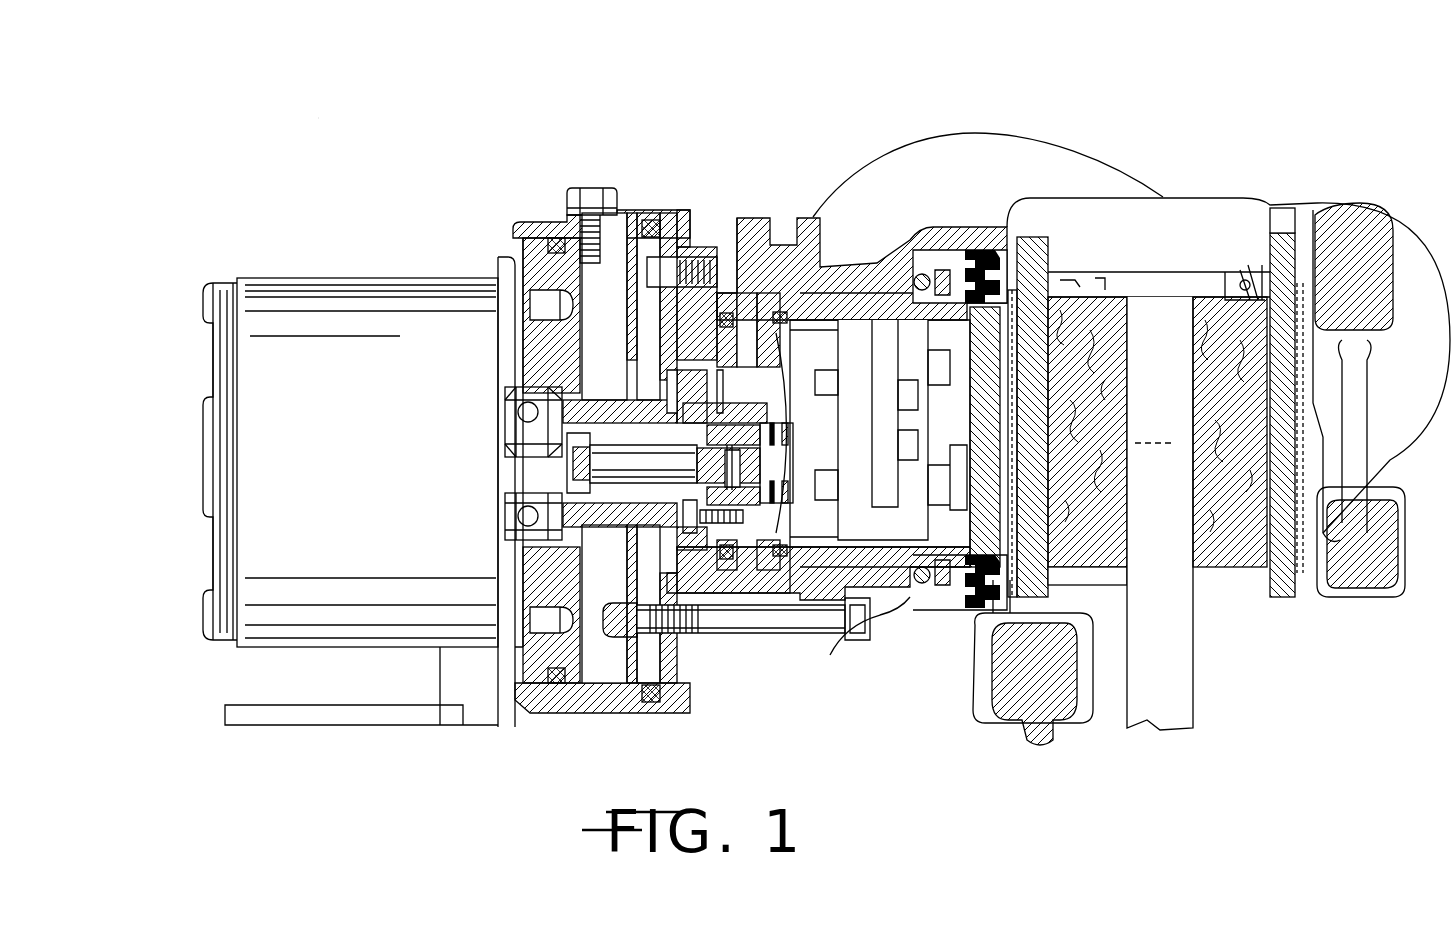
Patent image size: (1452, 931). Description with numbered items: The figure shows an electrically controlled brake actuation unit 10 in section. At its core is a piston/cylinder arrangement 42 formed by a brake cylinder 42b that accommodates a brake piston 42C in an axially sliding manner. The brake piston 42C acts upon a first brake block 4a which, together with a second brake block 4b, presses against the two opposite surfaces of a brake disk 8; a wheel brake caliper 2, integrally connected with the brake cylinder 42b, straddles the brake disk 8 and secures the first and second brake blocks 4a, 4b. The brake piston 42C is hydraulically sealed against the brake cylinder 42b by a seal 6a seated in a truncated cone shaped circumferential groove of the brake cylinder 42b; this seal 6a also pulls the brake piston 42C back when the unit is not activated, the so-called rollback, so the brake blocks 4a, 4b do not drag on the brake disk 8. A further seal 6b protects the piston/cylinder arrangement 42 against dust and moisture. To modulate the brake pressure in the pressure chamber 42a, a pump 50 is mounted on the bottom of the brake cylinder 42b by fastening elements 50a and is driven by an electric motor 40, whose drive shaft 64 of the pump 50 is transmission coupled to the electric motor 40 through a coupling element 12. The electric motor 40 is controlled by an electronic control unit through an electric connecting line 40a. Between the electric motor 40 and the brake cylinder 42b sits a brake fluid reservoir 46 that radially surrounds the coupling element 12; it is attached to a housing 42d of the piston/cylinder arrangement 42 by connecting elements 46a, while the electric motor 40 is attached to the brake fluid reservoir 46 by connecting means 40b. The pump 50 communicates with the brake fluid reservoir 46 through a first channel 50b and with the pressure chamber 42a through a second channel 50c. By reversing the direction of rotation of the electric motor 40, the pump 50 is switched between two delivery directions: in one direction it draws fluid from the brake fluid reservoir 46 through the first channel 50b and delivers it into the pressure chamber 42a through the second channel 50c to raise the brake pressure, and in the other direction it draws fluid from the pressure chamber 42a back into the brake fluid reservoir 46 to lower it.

The brake actuation unit 10 is at (317, 118).
The wheel brake caliper 2 is at (1210, 215).
The first brake block 4a is at (1118, 585).
The second brake block 4b is at (1227, 552).
The seal 6a is at (918, 592).
The seal 6b is at (967, 604).
The brake disk 8 is at (1157, 700).
The coupling element 12 is at (607, 463).
The electric motor 40 is at (363, 305).
The electric connecting line 40a is at (315, 725).
The connecting means 40b is at (210, 320).
The piston/cylinder arrangement 42 is at (876, 118).
The pressure chamber 42a is at (942, 330).
The brake cylinder 42b is at (891, 322).
The brake piston 42C is at (988, 435).
The housing 42d is at (762, 280).
The brake fluid reservoir 46 is at (600, 325).
The connecting elements 46a is at (680, 212).
The pump 50 is at (935, 433).
The fastening elements 50a is at (690, 507).
The first channel 50b is at (695, 392).
The second channel 50c is at (745, 305).
The drive shaft 64 is at (773, 467).